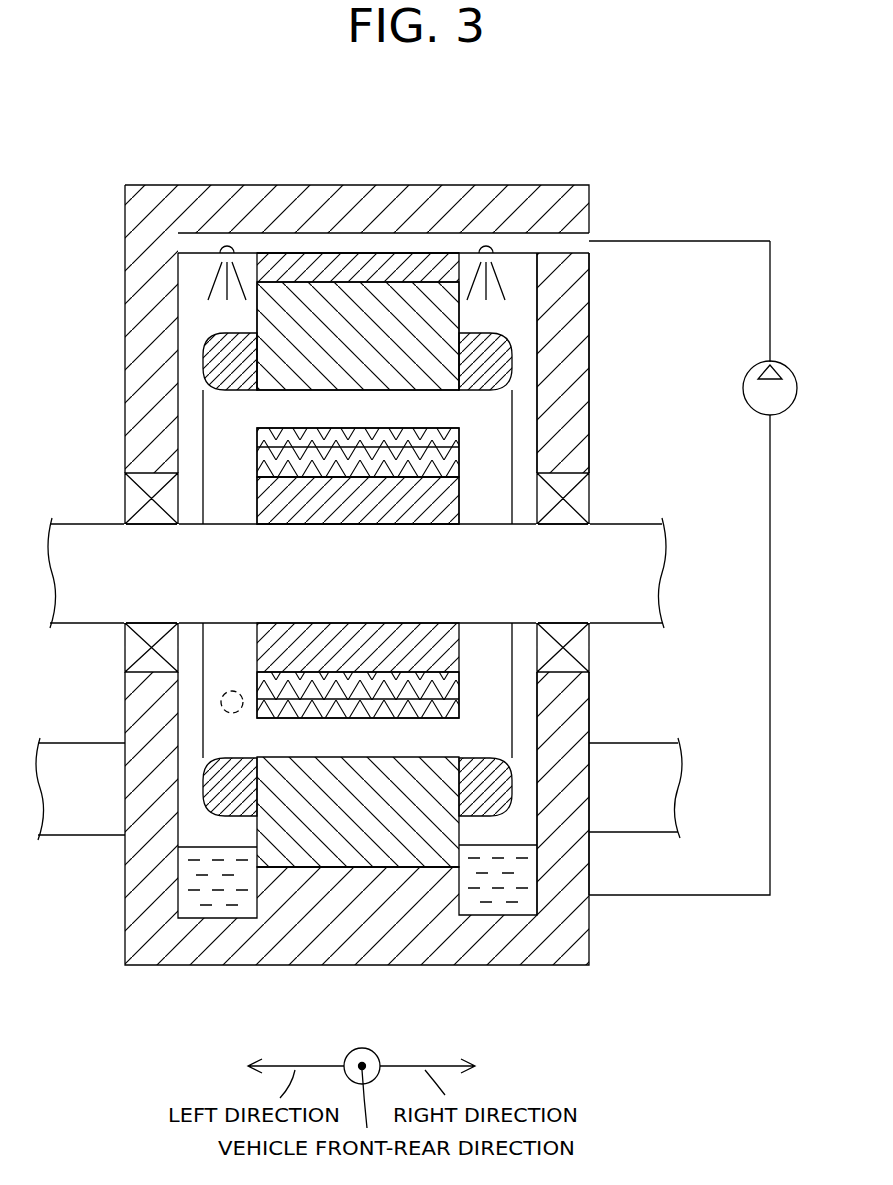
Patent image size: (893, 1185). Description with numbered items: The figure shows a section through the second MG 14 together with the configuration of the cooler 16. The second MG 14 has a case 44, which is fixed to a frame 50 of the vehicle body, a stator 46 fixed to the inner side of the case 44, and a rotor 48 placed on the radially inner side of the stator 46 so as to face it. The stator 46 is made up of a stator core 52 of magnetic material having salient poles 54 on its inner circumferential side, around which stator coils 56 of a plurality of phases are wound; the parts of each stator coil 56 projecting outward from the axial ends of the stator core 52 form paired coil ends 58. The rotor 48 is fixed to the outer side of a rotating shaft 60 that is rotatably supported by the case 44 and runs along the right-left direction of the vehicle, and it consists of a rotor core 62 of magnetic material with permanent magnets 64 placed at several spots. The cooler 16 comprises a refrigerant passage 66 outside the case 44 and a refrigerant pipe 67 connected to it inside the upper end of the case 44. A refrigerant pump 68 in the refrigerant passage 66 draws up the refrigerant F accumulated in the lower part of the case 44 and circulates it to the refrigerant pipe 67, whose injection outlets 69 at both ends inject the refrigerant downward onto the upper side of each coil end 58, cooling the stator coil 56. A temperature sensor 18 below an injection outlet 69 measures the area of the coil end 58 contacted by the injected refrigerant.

The second MG 14 is at (283, 174).
The cooler 16 is at (658, 231).
The temperature sensor 18 is at (221, 705).
The case 44 is at (372, 205).
The stator 46 is at (413, 310).
The rotor 48 is at (445, 490).
The frame 50 is at (628, 762).
The stator core 52 is at (327, 310).
The salient poles 54 is at (308, 362).
The stator coils 56 is at (482, 342).
The coil ends 58 is at (218, 355).
The rotating shaft 60 is at (627, 543).
The rotor core 62 is at (285, 508).
The permanent magnets 64 is at (288, 460).
The refrigerant passage 66 is at (718, 240).
The refrigerant pipe 67 is at (552, 250).
The refrigerant pump 68 is at (743, 388).
The injection outlets 69 is at (227, 245).
The refrigerant F is at (500, 893).